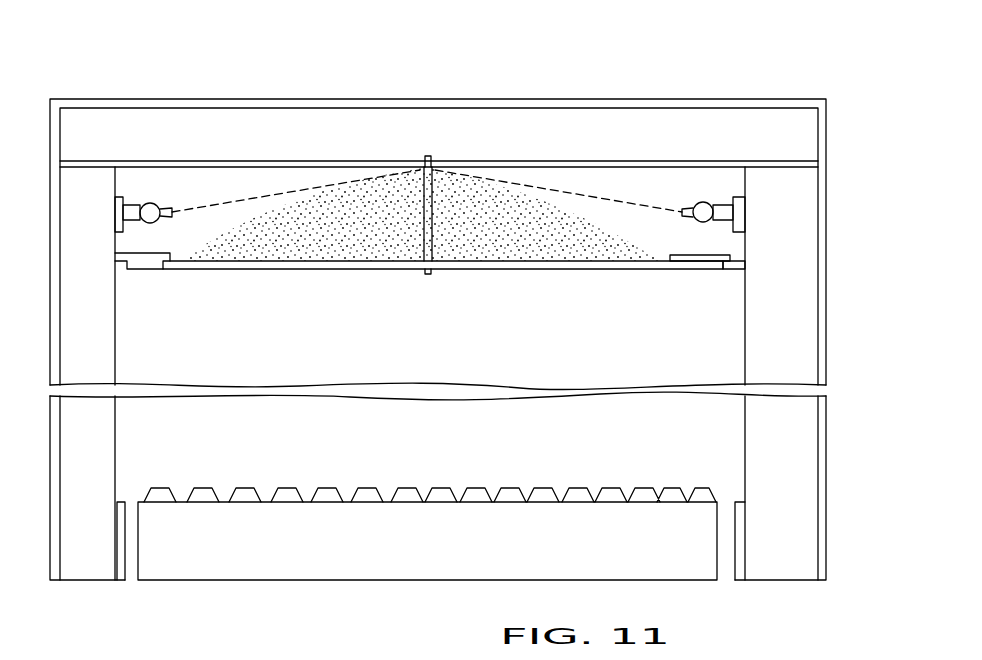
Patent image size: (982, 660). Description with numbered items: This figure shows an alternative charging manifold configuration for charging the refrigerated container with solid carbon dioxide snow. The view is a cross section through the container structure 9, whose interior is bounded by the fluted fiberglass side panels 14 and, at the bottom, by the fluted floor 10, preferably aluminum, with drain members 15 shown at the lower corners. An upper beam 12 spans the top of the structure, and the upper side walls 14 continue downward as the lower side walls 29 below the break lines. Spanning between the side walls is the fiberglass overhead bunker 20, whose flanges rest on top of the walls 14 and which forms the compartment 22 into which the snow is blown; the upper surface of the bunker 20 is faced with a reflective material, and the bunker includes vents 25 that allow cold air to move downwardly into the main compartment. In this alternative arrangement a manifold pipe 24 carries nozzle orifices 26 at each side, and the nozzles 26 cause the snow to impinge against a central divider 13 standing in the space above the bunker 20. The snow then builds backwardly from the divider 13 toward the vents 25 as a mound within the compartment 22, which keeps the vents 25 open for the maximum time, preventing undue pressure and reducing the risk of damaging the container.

The frame housing 9 is at (583, 99).
The top beam 12 is at (818, 167).
The divider 13 is at (432, 187).
The fluted fiberglass side panels 14 is at (745, 362).
The drain members 15 is at (130, 550).
The fiberglass overhead bunker 20 is at (727, 268).
The compartment 22 is at (630, 250).
The manifold pipe 24 is at (455, 214).
The vents 25 is at (698, 263).
The nozzle orifices 26 is at (686, 208).
The lower side wall 29 is at (730, 447).
The fluted floor 10 is at (710, 490).